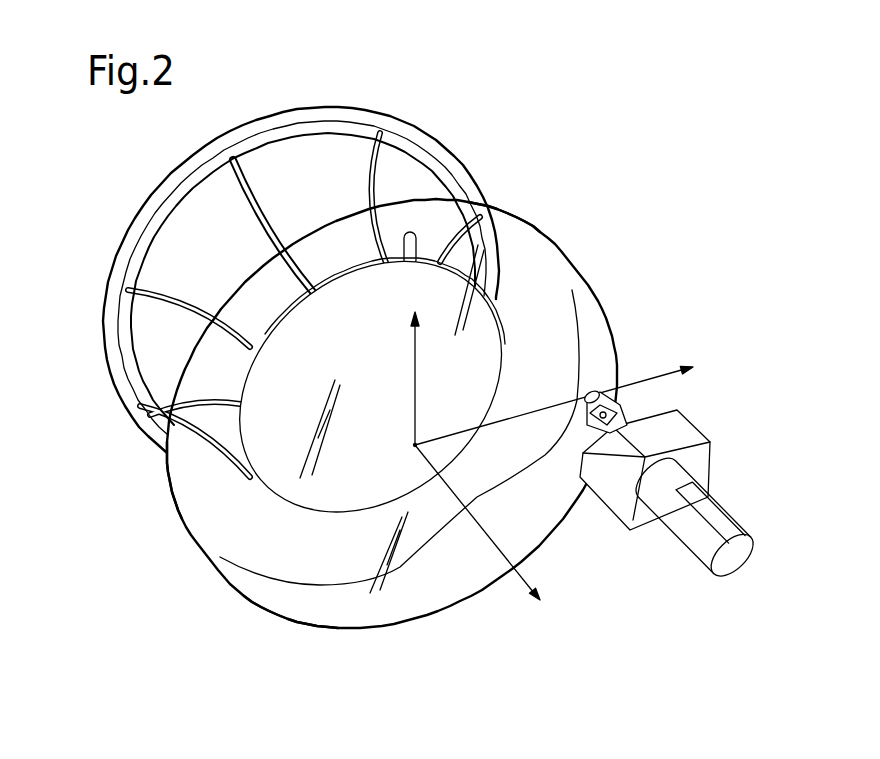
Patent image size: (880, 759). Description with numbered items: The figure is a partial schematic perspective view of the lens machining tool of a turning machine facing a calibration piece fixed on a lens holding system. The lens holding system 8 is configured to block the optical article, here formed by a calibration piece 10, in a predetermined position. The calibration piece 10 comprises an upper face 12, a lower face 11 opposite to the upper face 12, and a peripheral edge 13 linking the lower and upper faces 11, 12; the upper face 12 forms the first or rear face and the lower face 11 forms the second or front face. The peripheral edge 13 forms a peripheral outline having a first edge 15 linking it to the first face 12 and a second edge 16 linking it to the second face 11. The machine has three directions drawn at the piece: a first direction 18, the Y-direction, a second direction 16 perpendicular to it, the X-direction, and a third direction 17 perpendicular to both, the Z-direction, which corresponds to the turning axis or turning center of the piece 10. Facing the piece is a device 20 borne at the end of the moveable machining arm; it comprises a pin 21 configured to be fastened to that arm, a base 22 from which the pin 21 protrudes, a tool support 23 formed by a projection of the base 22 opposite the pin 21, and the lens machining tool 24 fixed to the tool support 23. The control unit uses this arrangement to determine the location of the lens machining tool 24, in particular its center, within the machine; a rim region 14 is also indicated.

The lens holding system 8 is at (315, 107).
The calibration piece 10 is at (588, 237).
The lower face 11 is at (508, 204).
The upper face 12 is at (557, 318).
The peripheral edge 13 is at (172, 488).
The rim 14 is at (172, 482).
The first edge 15 is at (266, 618).
The second edge 16 is at (512, 405).
The third direction 17 is at (455, 517).
The first direction 18 is at (413, 392).
The device 20 is at (698, 447).
The pin 21 is at (742, 557).
The base 22 is at (610, 497).
The tool support 23 is at (619, 410).
The lens machining tool 24 is at (593, 392).